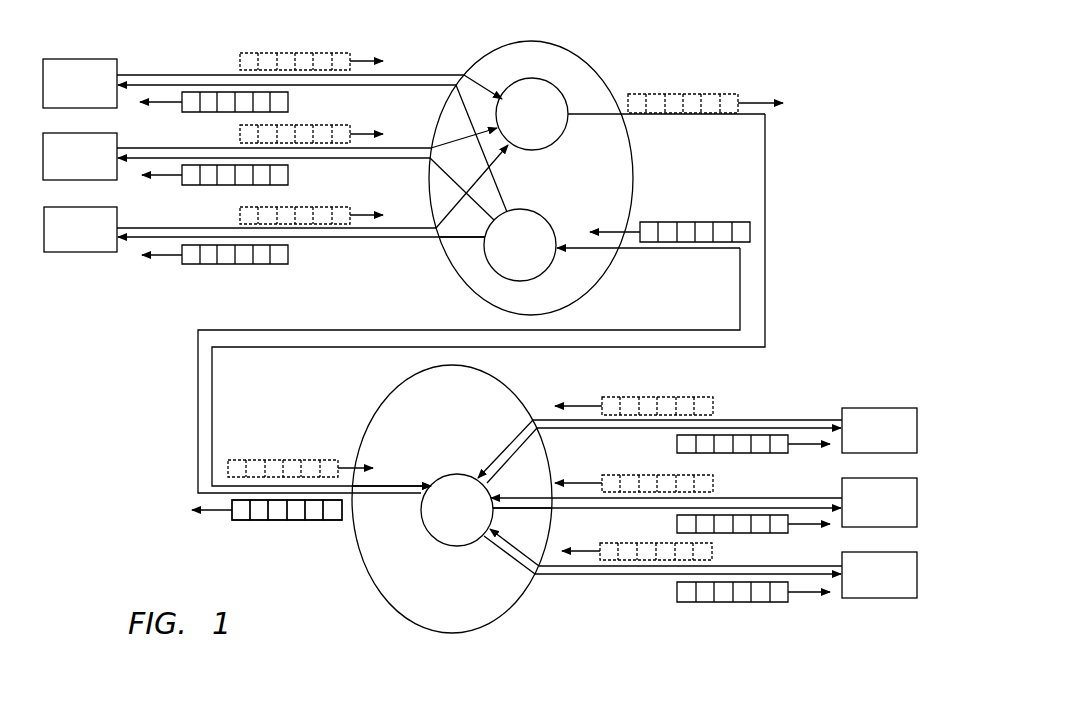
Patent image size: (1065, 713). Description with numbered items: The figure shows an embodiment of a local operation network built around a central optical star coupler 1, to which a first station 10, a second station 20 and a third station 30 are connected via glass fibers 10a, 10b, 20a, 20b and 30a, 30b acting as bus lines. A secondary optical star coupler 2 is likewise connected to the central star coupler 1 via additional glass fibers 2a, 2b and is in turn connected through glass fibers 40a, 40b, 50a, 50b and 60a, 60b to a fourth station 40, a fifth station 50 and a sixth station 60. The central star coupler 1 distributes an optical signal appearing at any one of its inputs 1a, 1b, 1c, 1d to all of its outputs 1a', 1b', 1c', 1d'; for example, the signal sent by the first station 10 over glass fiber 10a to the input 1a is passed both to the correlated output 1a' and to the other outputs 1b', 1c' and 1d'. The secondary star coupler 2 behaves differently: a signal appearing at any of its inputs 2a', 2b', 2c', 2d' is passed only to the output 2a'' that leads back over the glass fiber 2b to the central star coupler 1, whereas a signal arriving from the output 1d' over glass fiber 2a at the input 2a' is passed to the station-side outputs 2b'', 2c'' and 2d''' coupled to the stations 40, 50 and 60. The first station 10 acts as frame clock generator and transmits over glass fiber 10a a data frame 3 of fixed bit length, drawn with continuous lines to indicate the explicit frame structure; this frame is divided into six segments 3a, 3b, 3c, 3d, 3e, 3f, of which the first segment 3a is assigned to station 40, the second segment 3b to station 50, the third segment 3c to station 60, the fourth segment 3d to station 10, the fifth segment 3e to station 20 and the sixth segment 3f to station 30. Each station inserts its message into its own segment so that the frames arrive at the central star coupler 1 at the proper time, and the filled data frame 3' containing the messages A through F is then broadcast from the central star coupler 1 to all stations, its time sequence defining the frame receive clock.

The central optical star coupler 1 is at (388, 603).
The input of central star coupler 1a is at (520, 580).
The output of central star coupler 1a' is at (513, 569).
The input of central star coupler 1b is at (521, 479).
The output of central star coupler 1b' is at (522, 520).
The input of central star coupler 1c is at (514, 430).
The output of central star coupler 1c' is at (527, 449).
The input of central star coupler 1d is at (386, 508).
The output of central star coupler 1d' is at (391, 460).
The secondary optical star coupler 2 is at (586, 81).
The glass fiber 2a is at (469, 370).
The input of secondary star coupler 2a' is at (648, 265).
The outgoing trunk section of node 2 2a'' is at (666, 129).
The glass fiber 2b is at (509, 300).
The input of secondary star coupler 2b' is at (453, 260).
The output of secondary star coupler 2b'' is at (472, 186).
The input of secondary star coupler 2c' is at (462, 189).
The output of secondary star coupler 2c'' is at (464, 132).
The input of secondary star coupler 2d' is at (469, 130).
The link line of node 2 from terminal 60 2d''' is at (477, 65).
The data frame 3 is at (491, 328).
The filled data frame 3' is at (485, 368).
The first segment of data frame 3a is at (243, 521).
The second segment of data frame 3b is at (261, 521).
The third segment of data frame 3c is at (280, 521).
The fourth segment of data frame 3d is at (299, 521).
The fifth segment of data frame 3e is at (318, 521).
The sixth segment of data frame 3f is at (337, 521).
The first station 10 is at (894, 565).
The glass fiber 10a is at (769, 567).
The glass fiber 10b is at (595, 576).
The second station 20 is at (894, 490).
The glass fiber 20a is at (769, 498).
The glass fiber 20b is at (592, 508).
The third station 30 is at (886, 412).
The glass fiber 30a is at (804, 420).
The glass fiber 30b is at (624, 428).
The fourth station 40 is at (66, 215).
The glass fiber 40a is at (412, 228).
The glass fiber 40b is at (392, 237).
The fifth station 50 is at (66, 140).
The glass fiber 50a is at (414, 148).
The glass fiber 50b is at (366, 158).
The sixth station 60 is at (66, 66).
The glass fiber 60a is at (414, 75).
The glass fiber 60b is at (368, 85).